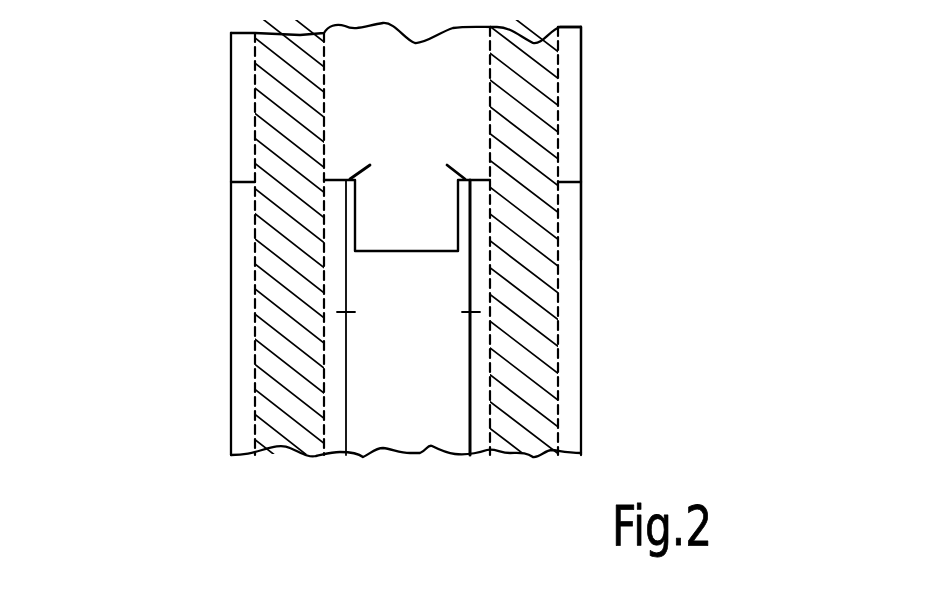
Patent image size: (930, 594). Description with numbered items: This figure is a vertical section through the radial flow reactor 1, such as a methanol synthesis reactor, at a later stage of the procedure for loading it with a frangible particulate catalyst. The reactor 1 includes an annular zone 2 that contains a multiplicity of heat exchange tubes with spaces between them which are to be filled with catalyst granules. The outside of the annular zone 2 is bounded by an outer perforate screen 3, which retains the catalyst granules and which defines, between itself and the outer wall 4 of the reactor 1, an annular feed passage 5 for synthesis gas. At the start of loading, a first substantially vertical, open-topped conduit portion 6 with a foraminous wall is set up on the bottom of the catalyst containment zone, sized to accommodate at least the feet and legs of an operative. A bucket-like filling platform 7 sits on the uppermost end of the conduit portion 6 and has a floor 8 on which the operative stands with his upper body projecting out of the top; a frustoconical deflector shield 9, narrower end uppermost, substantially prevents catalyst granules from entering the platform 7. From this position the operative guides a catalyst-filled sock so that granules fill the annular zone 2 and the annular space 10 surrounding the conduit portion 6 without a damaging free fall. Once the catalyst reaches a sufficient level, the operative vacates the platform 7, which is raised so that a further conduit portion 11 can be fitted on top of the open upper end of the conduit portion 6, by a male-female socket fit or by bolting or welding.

The radial flow reactor 1 is at (232, 235).
The annular zone 2 is at (530, 297).
The outer perforate screen 3 is at (560, 210).
The outer wall 4 is at (583, 337).
The annular feed passage 5 is at (570, 130).
The first conduit portion 6 is at (347, 387).
The filling platform 7 is at (458, 205).
The floor 8 is at (390, 252).
The deflector shield 9 is at (370, 165).
The annular space 10 is at (337, 417).
The further conduit portion 11 is at (468, 293).